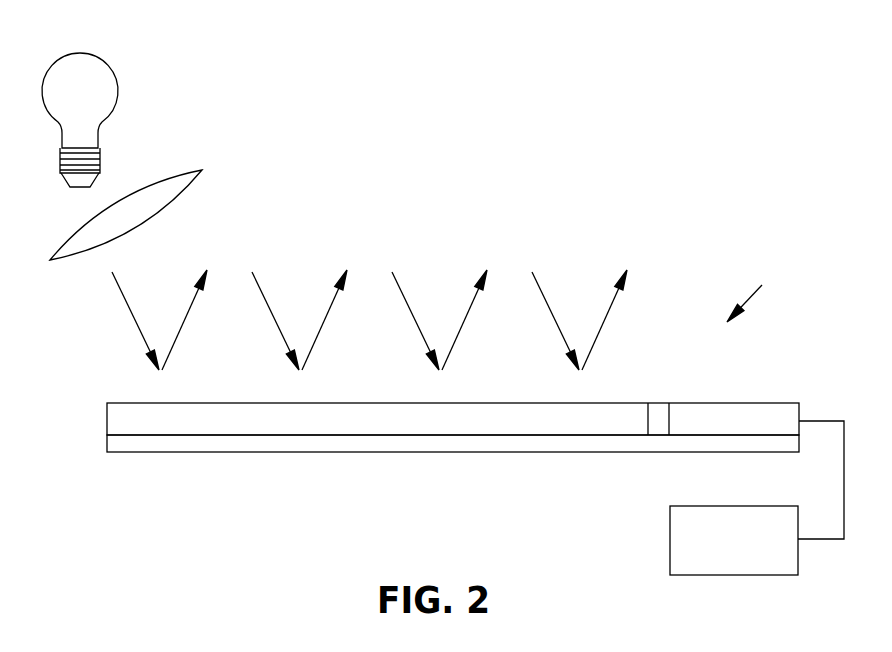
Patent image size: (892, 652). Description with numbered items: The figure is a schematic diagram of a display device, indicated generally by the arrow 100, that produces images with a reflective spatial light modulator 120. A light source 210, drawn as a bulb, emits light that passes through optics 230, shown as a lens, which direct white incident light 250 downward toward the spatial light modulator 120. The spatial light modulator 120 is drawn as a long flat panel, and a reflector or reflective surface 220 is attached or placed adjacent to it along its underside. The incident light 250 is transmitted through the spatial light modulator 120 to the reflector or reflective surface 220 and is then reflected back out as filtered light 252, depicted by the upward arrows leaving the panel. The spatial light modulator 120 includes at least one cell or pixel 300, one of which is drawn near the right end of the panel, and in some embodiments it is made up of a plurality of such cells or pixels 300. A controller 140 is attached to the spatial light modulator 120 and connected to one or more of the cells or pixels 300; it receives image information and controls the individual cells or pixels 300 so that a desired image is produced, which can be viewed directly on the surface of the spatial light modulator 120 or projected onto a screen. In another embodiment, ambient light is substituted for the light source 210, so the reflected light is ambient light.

The touch sensing system 100 is at (755, 290).
The spatial light modulator 120 is at (107, 418).
The controller 140 is at (733, 505).
The light source 210 is at (80, 57).
The reflector or reflective surface 220 is at (455, 453).
The optics 230 is at (137, 230).
The incident light 250 is at (135, 324).
The filtered light 252 is at (187, 322).
The cell or pixel 300 is at (656, 402).